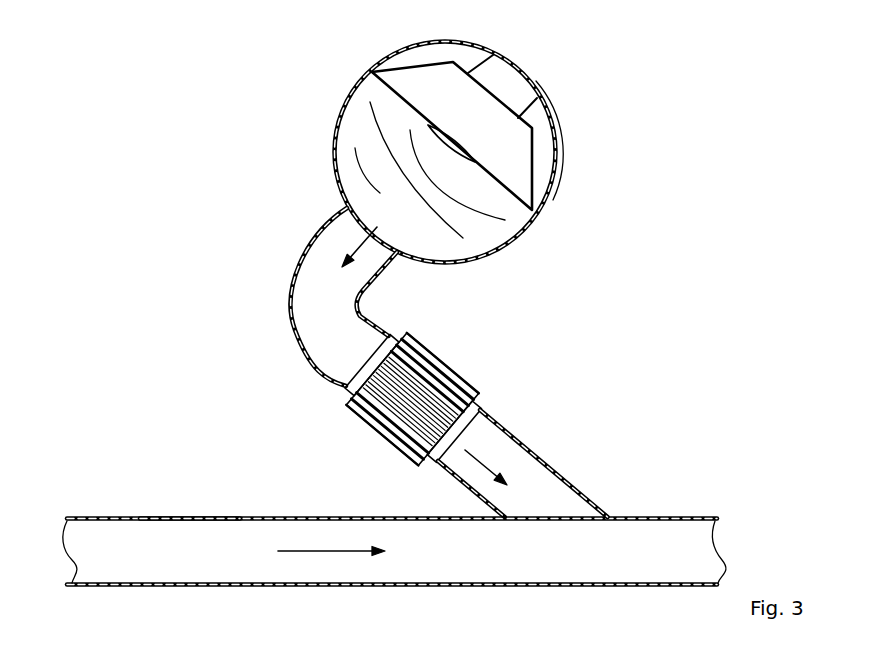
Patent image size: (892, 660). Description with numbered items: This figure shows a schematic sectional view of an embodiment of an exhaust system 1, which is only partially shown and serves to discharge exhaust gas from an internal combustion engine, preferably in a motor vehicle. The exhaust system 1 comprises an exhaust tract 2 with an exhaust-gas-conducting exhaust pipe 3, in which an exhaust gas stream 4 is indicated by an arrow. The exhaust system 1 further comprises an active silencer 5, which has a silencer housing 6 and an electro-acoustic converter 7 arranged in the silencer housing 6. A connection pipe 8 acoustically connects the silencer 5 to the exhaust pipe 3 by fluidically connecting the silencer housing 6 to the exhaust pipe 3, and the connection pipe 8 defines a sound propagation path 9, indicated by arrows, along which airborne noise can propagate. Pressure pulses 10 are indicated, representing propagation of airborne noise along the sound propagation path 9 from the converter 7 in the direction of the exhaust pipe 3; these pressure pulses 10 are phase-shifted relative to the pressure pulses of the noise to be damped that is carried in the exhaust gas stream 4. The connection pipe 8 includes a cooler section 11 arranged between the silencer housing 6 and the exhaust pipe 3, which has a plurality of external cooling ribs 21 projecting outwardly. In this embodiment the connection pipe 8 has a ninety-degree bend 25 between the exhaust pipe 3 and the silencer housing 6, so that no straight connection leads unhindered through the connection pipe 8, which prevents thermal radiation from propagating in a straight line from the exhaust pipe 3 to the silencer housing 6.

The exhaust system 1 is at (730, 266).
The exhaust tract 2 is at (108, 510).
The exhaust pipe 3 is at (183, 516).
The exhaust gas stream 4 is at (325, 552).
The active silencer 5 is at (566, 124).
The silencer housing 6 is at (558, 166).
The electro-acoustic converter 7 is at (525, 180).
The connection pipe 8 is at (564, 461).
The sound propagation path 9 is at (360, 240).
The pressure pulses 10 is at (397, 155).
The cooler section 11 is at (426, 383).
The external cooling ribs 21 is at (373, 408).
The 90° bend 25 is at (290, 310).